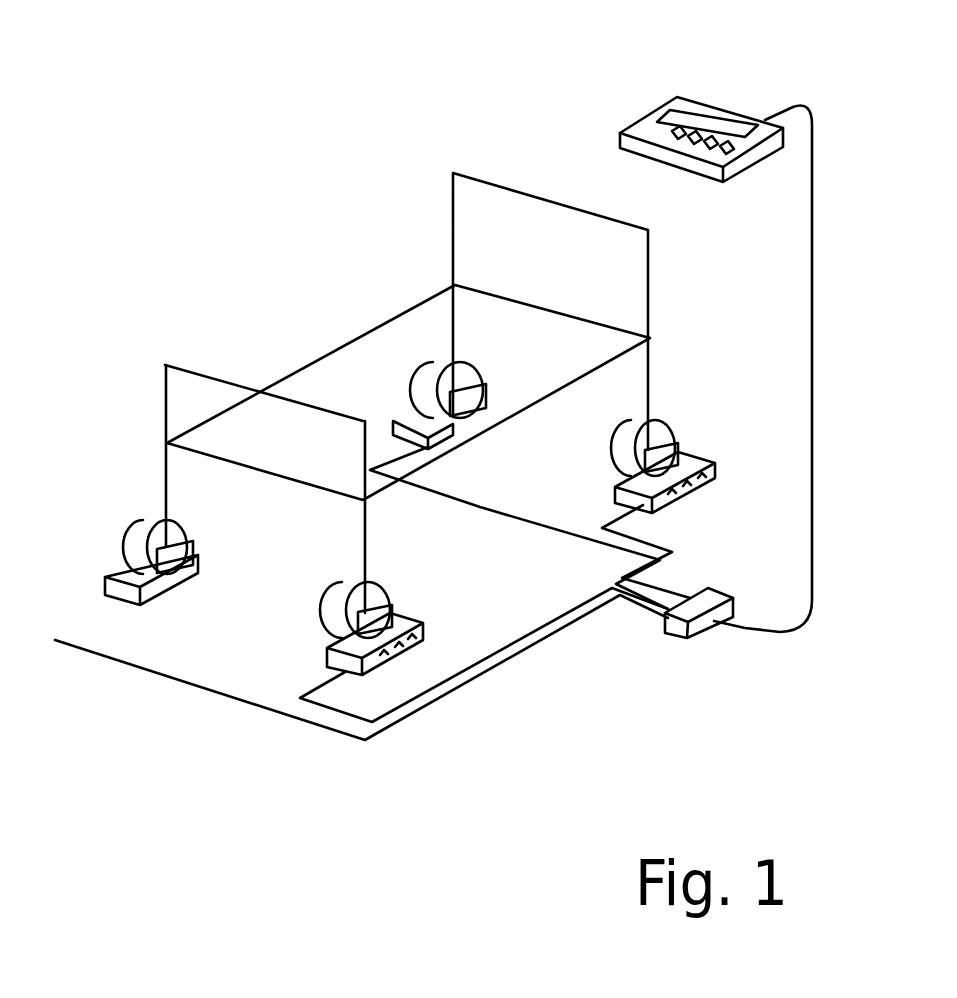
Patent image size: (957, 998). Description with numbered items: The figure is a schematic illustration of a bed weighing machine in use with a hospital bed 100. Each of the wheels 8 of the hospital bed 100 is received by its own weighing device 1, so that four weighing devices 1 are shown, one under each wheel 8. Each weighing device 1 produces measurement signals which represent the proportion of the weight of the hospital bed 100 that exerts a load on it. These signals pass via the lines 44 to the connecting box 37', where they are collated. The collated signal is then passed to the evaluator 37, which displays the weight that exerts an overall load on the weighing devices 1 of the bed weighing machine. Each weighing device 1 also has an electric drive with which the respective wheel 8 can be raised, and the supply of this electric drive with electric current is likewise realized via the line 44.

The hospital bed 100 is at (495, 228).
The evaluator 37 is at (693, 318).
The connecting box 37' is at (685, 689).
The lines 44 is at (613, 517).
The weighing device 1 is at (153, 590).
The wheel 8 is at (155, 537).